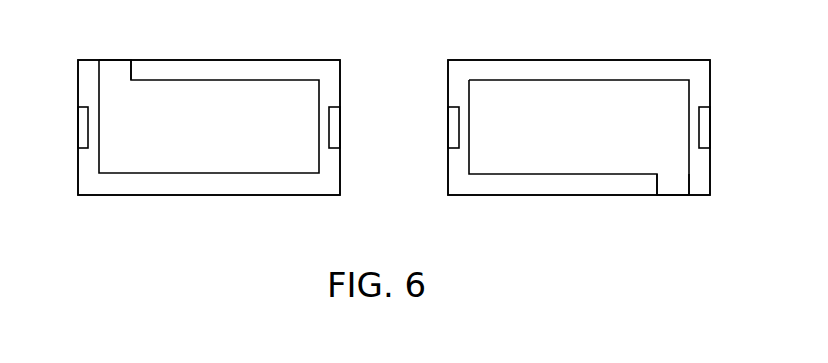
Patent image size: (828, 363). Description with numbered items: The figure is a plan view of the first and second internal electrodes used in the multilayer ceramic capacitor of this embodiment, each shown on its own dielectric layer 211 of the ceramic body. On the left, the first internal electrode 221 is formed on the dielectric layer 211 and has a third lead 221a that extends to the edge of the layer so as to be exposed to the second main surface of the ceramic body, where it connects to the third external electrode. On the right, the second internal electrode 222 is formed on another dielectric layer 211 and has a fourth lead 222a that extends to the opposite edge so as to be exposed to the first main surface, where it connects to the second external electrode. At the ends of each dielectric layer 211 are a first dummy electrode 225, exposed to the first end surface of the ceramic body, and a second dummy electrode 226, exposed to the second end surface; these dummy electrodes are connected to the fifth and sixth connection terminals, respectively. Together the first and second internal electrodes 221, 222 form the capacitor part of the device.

The dielectric layer 211 is at (327, 70).
The first internal electrode 221 is at (208, 153).
The third lead 221a is at (113, 72).
The second internal electrode 222 is at (580, 153).
The fourth lead 222a is at (670, 182).
The first dummy electrode 225 is at (83, 128).
The second dummy electrode 226 is at (334, 128).